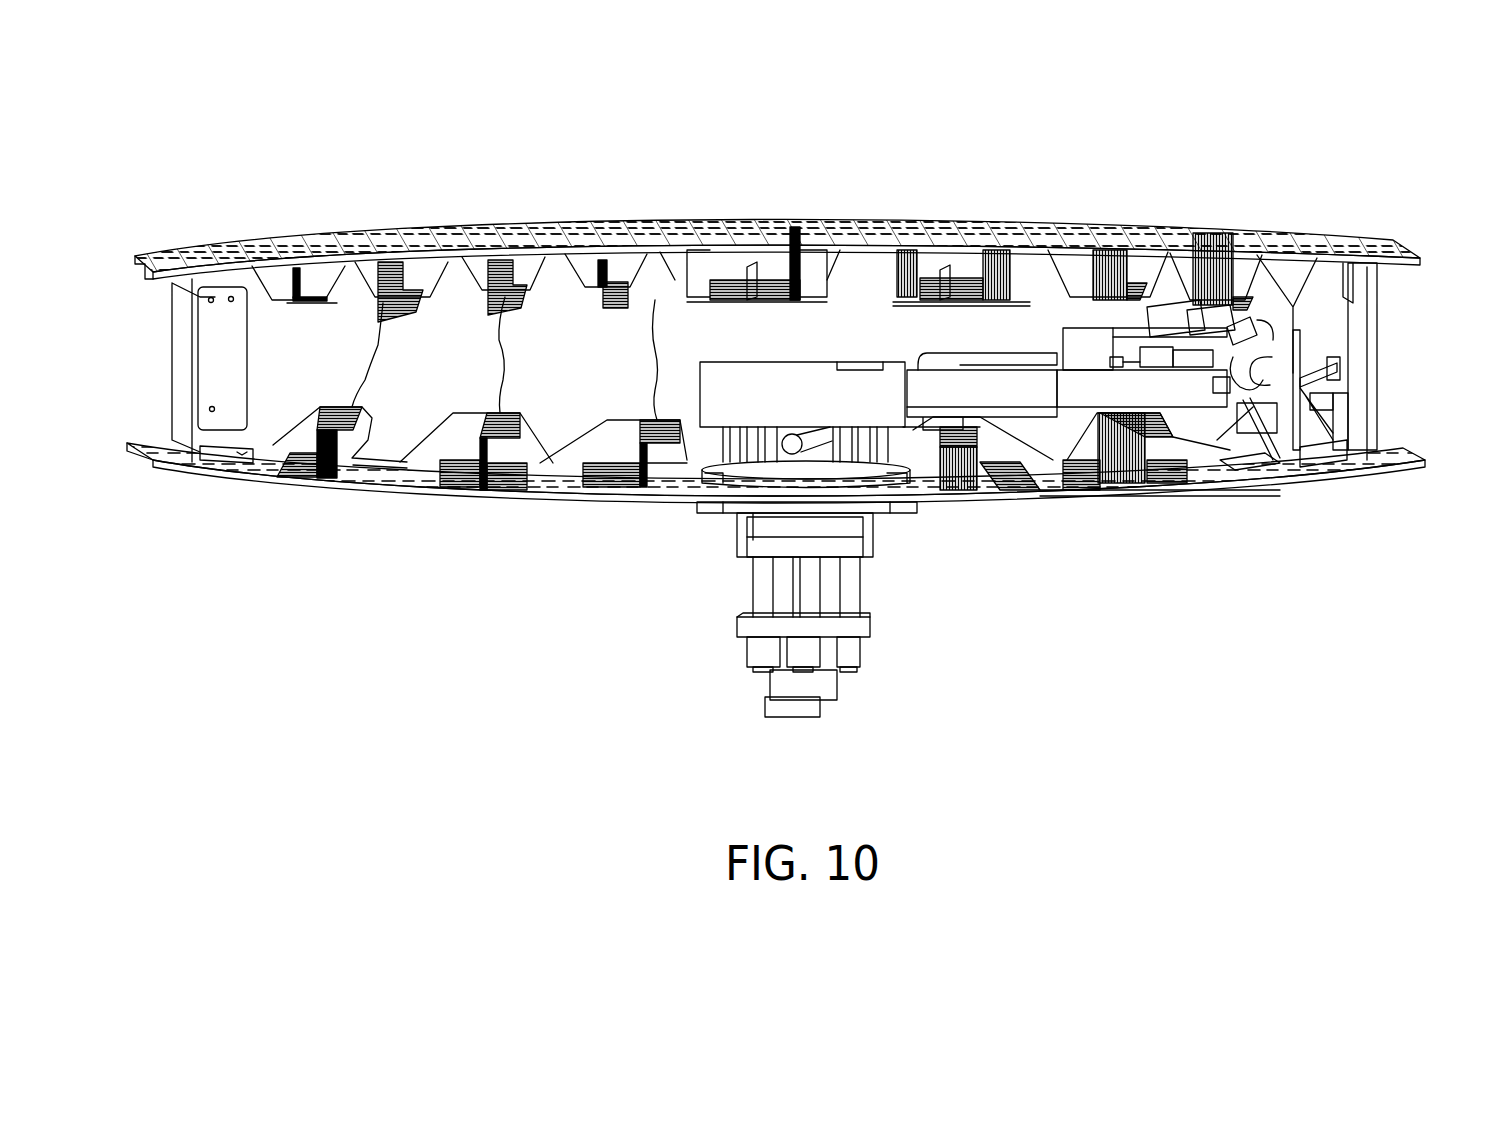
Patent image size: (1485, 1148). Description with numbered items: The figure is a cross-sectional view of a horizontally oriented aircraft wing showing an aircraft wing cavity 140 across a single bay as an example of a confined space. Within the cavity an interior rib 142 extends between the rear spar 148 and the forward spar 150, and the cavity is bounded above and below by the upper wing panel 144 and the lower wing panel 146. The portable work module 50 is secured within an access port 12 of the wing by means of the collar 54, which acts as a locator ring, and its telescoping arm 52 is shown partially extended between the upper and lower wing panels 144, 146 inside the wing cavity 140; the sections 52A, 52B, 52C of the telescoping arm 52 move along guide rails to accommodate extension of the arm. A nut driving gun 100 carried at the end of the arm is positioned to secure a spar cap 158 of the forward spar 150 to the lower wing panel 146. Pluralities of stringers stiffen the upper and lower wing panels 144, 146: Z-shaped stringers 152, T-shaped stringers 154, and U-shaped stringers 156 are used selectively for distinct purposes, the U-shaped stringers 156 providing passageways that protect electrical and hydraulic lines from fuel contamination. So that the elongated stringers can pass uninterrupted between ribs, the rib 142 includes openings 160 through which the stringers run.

The aircraft wing cavity 140 is at (343, 185).
The interior rib 142 is at (322, 372).
The upper wing panel 144 is at (1063, 224).
The lower wing panel 146 is at (403, 490).
The rear spar 148 is at (180, 366).
The forward spar 150 is at (1360, 344).
The Z-shaped stringer 152 is at (380, 373).
The T-shaped stringer 154 is at (503, 385).
The U-shaped stringer 156 is at (733, 303).
The spar cap 158 is at (215, 462).
The opening 160 is at (324, 284).
The telescoping arm 52 is at (825, 356).
The telescoping arm section 52A is at (802, 394).
The telescoping arm section 52B is at (982, 391).
The telescoping arm section 52C is at (1167, 366).
The collar 54 is at (713, 467).
The access port 12 is at (697, 506).
The portable work module 50 is at (893, 582).
The nut driving gun 100 is at (1337, 425).